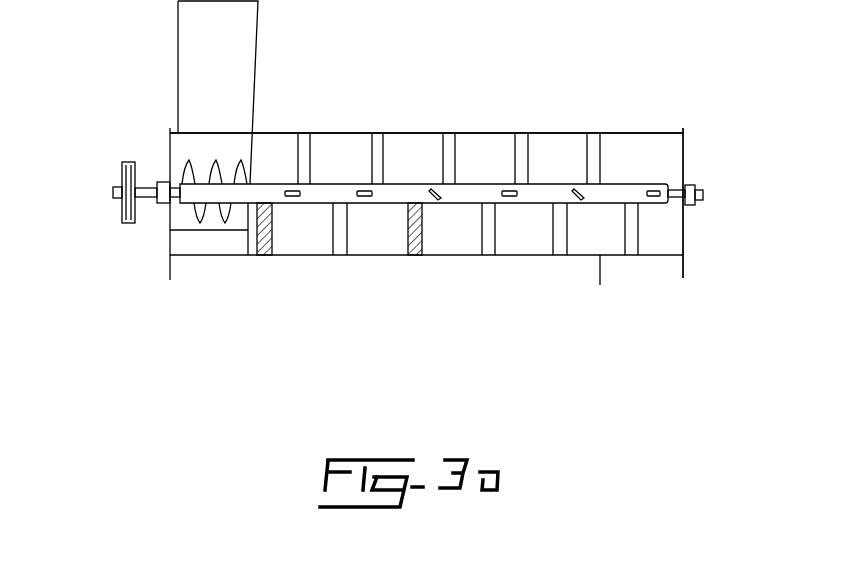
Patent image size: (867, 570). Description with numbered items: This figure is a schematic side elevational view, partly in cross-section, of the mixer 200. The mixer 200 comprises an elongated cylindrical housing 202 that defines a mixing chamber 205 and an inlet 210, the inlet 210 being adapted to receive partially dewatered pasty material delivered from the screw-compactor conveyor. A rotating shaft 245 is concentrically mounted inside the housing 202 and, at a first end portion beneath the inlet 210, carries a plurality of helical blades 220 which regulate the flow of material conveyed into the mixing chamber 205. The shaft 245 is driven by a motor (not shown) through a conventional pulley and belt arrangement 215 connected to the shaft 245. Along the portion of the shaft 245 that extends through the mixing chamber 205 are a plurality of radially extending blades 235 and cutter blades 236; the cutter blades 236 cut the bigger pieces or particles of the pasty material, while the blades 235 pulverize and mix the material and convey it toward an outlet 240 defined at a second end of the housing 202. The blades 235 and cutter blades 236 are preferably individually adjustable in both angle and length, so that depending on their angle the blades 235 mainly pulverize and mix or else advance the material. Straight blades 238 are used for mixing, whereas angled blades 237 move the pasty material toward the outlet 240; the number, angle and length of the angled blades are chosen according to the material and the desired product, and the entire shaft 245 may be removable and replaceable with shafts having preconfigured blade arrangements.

The mixer 200 is at (690, 230).
The elongated cylindrical housing 202 is at (353, 133).
The mixing chamber 205 is at (345, 153).
The inlet 210 is at (205, 73).
The pulley and belt arrangement 215 is at (128, 163).
The helical blades 220 is at (200, 208).
The radially extending blades 235 is at (560, 242).
The cutter blades 236 is at (415, 255).
The angled blades 237 is at (435, 187).
The straight blades 238 is at (457, 158).
The outlet 240 is at (657, 243).
The rotating shaft 245 is at (621, 193).